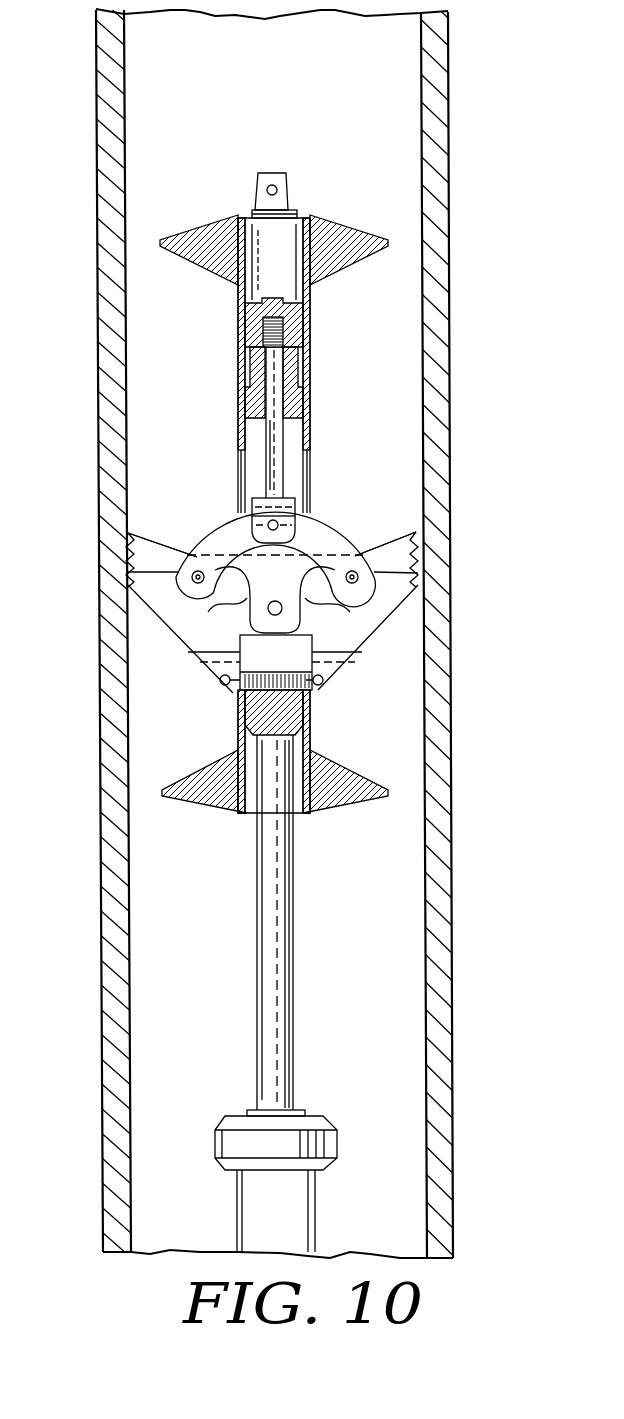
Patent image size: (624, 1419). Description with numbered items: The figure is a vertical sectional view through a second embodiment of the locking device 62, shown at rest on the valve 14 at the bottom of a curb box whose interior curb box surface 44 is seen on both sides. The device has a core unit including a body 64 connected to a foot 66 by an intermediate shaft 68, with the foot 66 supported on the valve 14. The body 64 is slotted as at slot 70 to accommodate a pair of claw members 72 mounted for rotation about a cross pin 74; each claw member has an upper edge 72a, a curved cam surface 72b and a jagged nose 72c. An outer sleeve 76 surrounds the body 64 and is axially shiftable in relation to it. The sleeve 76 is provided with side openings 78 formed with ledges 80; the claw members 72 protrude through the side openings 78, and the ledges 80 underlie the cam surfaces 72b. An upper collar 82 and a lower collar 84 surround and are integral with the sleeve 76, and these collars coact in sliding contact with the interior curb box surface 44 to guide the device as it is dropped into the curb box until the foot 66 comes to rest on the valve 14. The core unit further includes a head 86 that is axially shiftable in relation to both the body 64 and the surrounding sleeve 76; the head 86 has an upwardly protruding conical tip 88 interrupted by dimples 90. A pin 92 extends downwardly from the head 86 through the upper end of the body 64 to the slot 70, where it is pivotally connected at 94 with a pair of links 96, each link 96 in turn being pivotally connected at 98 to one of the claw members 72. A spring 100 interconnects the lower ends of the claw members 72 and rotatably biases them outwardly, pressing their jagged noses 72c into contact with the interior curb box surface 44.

The valve 14 is at (328, 1205).
The interior curb box surface 44 is at (410, 214).
The locking device 62 is at (372, 364).
The body 64 is at (243, 415).
The foot 66 is at (338, 1146).
The intermediate shaft 68 is at (295, 950).
The slot 70 is at (290, 462).
The claw members 72 is at (185, 645).
The upper edge 72a is at (148, 540).
The curved cam surface 72b is at (212, 605).
The jagged nose 72c is at (127, 560).
The cross pin 74 is at (276, 601).
The outer sleeve 76 is at (305, 330).
The side openings 78 is at (240, 464).
The ledges 80 is at (186, 651).
The upper collar 82 is at (318, 223).
The lower collar 84 is at (328, 810).
The head 86 is at (265, 287).
The conical tip 88 is at (269, 174).
The dimples 90 is at (281, 191).
The pin 92 is at (277, 434).
The pivotal connection 94 is at (270, 522).
The links 96 is at (325, 532).
The pivotal connection 98 is at (192, 578).
The spring 100 is at (270, 678).